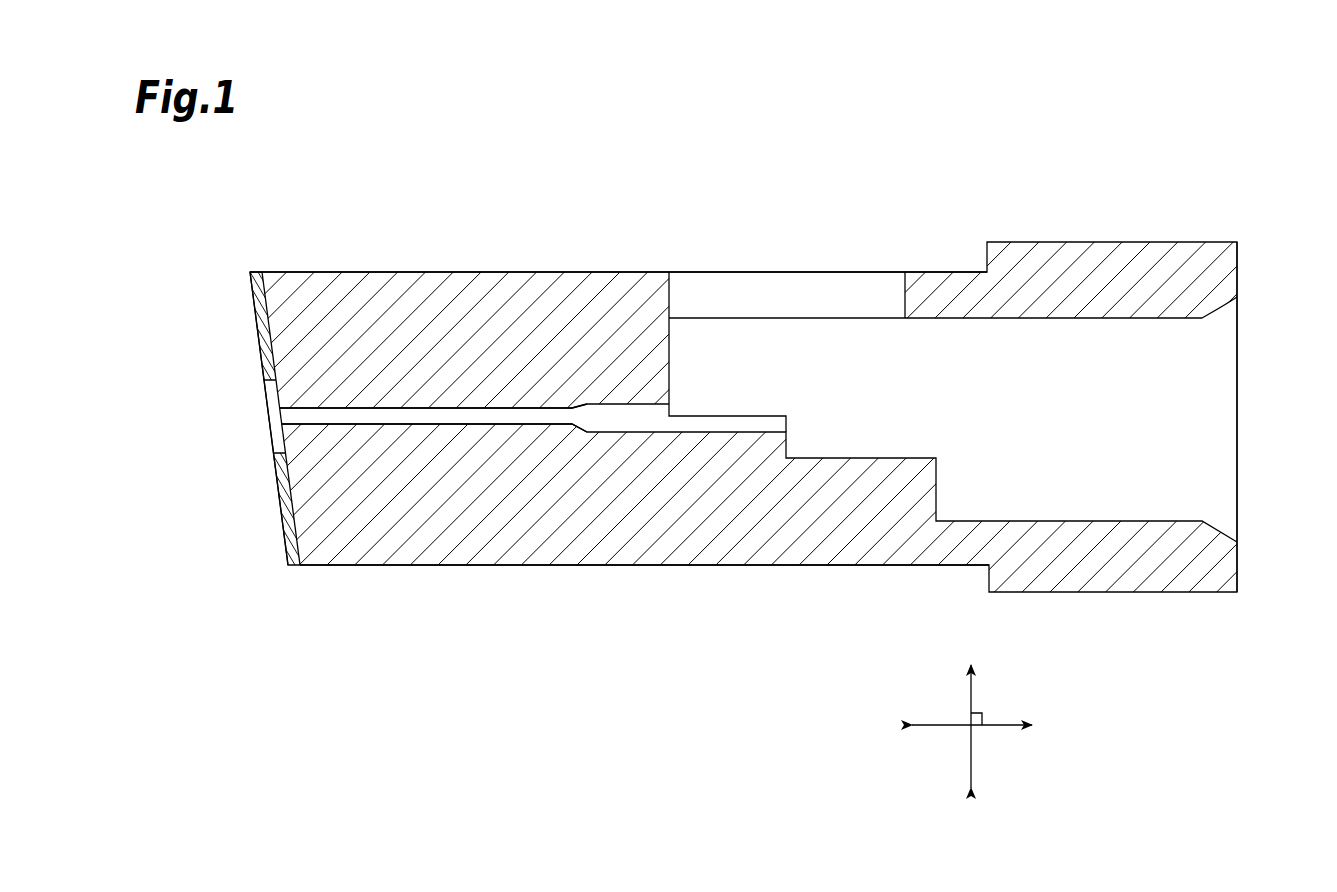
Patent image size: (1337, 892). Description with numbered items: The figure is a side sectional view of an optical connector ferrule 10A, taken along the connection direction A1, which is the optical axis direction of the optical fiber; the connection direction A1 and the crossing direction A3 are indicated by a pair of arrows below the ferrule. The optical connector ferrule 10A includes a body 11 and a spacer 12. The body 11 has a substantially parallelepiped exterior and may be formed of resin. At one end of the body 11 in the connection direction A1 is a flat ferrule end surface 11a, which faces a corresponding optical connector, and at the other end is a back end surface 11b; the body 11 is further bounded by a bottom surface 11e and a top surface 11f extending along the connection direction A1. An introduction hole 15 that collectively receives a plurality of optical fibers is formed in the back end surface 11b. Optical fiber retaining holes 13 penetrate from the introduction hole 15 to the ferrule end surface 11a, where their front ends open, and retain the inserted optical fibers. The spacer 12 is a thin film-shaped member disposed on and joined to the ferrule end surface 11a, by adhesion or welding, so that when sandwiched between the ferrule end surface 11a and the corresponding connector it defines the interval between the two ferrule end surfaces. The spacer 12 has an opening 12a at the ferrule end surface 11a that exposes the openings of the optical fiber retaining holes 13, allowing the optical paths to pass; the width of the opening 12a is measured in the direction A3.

The optical connector ferrule 10A is at (1137, 113).
The body 11 is at (550, 566).
The ferrule end surface 11a is at (278, 495).
The back end surface 11b is at (1239, 558).
The bottom surface 11e is at (710, 566).
The top surface 11f is at (586, 272).
The spacer 12 is at (282, 540).
The opening 12a is at (265, 386).
The optical fiber retaining holes 13 is at (440, 425).
The introduction hole 15 is at (1226, 358).
The connection direction A1 is at (1003, 728).
The direction A3 is at (973, 694).